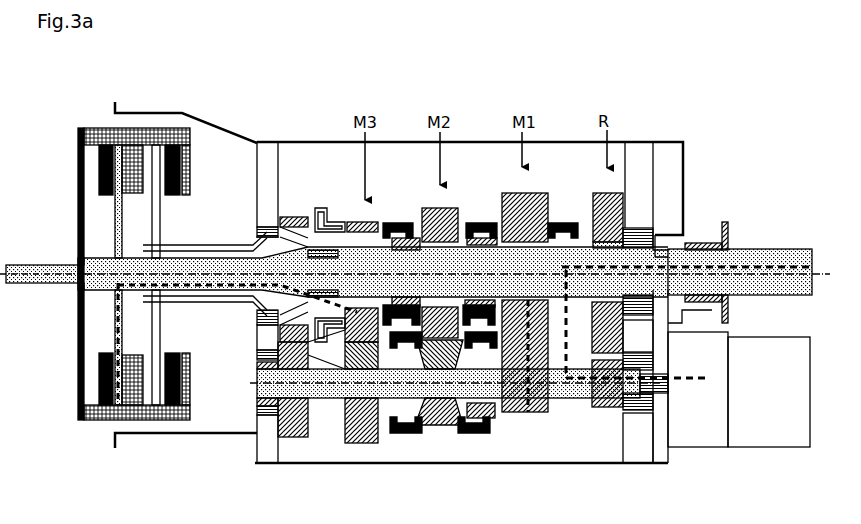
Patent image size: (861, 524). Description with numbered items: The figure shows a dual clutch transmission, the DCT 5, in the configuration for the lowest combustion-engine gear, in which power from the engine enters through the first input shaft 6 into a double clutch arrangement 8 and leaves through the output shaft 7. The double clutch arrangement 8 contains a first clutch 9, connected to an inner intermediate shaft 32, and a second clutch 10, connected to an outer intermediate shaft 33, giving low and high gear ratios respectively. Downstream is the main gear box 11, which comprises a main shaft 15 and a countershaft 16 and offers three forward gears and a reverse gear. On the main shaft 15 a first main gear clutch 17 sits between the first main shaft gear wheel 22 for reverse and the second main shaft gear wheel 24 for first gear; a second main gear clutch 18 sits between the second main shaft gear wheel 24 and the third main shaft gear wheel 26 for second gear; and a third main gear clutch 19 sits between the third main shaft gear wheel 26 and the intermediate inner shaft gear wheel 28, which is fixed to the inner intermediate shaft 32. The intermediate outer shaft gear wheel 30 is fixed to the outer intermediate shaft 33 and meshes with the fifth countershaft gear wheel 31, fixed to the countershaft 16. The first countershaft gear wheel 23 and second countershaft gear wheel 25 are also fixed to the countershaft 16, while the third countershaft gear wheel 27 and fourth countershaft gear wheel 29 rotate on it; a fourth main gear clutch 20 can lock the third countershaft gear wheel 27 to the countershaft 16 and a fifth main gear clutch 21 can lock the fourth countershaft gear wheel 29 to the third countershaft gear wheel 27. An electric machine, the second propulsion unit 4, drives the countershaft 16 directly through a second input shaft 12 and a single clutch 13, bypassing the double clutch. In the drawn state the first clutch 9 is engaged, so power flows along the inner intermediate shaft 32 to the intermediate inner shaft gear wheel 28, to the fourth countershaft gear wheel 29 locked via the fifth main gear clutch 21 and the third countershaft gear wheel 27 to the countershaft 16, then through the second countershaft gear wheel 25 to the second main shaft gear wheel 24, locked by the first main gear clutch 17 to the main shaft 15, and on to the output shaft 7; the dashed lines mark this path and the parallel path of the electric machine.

The second propulsion unit 4 is at (772, 376).
The DCT 5 is at (164, 92).
The first input shaft 6 is at (20, 284).
The output shaft 7 is at (763, 248).
The double clutch arrangement 8 is at (78, 165).
The first clutch 9 is at (125, 385).
The second clutch 10 is at (174, 410).
The main gear box 11 is at (643, 157).
The second input shaft 12 is at (657, 388).
The single clutch 13 is at (712, 416).
The main shaft 15 is at (583, 256).
The countershaft 16 is at (570, 400).
The first main gear clutch 17 is at (562, 223).
The second main gear clutch 18 is at (480, 223).
The third main gear clutch 19 is at (398, 227).
The fourth main gear clutch 20 is at (472, 434).
The fifth main gear clutch 21 is at (407, 438).
The first main shaft gear wheel 22 is at (618, 193).
The first countershaft gear wheel 23 is at (607, 408).
The second main shaft gear wheel 24 is at (503, 193).
The second countershaft gear wheel 25 is at (527, 418).
The third main shaft gear wheel 26 is at (430, 210).
The third countershaft gear wheel 27 is at (442, 431).
The intermediate inner shaft gear wheel 28 is at (353, 222).
The fourth countershaft gear wheel 29 is at (358, 444).
The intermediate outer shaft gear wheel 30 is at (293, 215).
The fifth countershaft gear wheel 31 is at (295, 434).
The inner intermediate shaft 32 is at (82, 259).
The outer intermediate shaft 33 is at (183, 300).